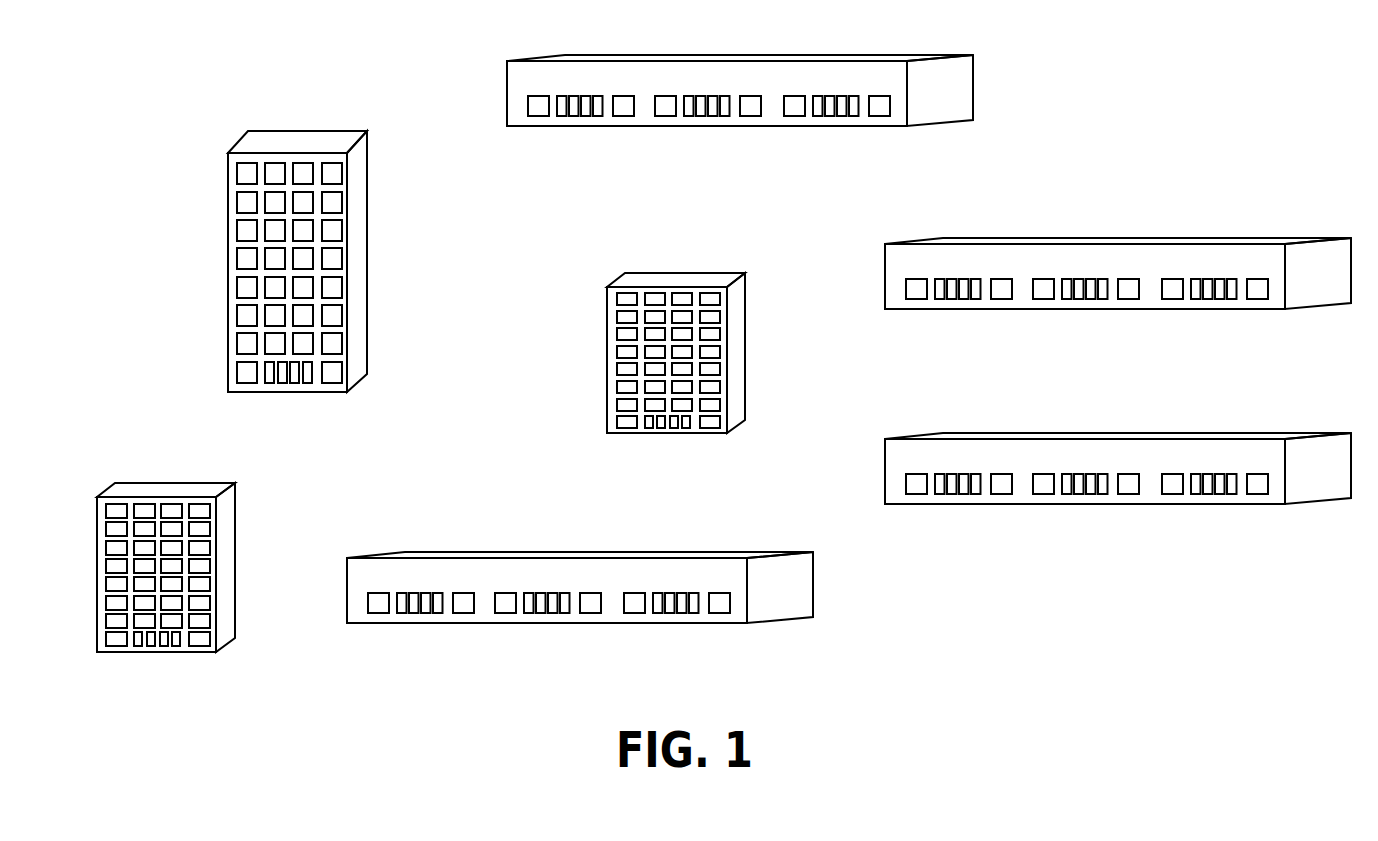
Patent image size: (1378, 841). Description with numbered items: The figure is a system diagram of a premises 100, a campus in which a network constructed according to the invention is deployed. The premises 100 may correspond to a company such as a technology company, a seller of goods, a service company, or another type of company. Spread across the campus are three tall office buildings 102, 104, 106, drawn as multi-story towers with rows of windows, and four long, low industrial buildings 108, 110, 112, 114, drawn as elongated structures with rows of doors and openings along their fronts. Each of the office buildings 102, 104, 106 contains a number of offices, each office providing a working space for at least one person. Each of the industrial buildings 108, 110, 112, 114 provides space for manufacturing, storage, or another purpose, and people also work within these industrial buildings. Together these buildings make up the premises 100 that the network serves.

The premises 100 is at (1170, 638).
The office building 102 is at (235, 537).
The office building 104 is at (368, 247).
The office building 106 is at (747, 316).
The industrial building 108 is at (685, 553).
The industrial building 110 is at (1220, 433).
The industrial building 112 is at (1220, 238).
The industrial building 114 is at (842, 53).